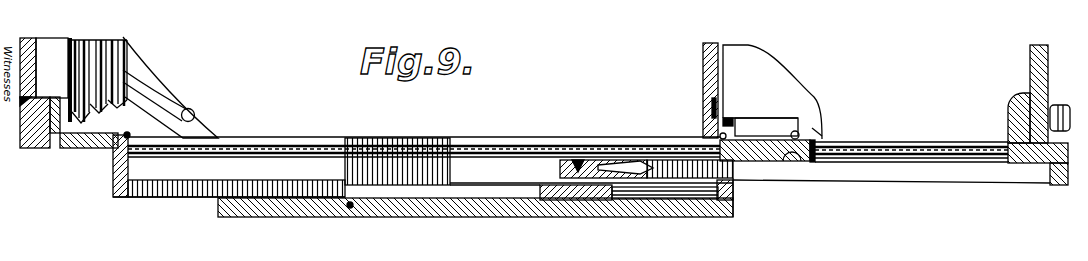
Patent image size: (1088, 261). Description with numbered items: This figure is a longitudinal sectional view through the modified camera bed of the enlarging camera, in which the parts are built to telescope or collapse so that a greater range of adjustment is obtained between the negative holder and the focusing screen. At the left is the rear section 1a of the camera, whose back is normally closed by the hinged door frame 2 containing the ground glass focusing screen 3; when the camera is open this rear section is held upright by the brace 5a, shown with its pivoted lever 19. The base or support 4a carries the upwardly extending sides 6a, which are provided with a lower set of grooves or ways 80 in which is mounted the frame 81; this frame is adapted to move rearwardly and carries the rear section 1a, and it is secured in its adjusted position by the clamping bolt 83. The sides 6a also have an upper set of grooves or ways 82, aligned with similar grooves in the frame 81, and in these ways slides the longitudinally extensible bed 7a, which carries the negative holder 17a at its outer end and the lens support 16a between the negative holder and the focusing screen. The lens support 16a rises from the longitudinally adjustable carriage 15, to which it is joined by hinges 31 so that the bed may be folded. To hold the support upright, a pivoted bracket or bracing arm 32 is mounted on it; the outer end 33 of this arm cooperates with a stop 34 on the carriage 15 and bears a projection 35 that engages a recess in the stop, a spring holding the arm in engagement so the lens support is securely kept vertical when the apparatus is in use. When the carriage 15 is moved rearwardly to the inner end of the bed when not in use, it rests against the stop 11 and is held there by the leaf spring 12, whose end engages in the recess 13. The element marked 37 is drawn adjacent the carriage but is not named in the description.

The hinged door frame 2 is at (30, 148).
The ground glass focusing screen 3 is at (73, 80).
The rear section 1a is at (64, 150).
The brace 5a is at (170, 93).
The lever 19 is at (153, 96).
The upper set of grooves or ways 82 is at (263, 153).
The frame 81 is at (295, 188).
The clamping bolt 83 is at (347, 208).
The upwardly extending sides 6a is at (397, 161).
The stop 11 is at (562, 153).
The leaf spring 12 is at (605, 157).
The base or support 4a is at (645, 205).
The lower set of grooves or ways 80 is at (712, 200).
The lens support 16a is at (703, 98).
The pivoted bracket or bracing arm 32 is at (758, 80).
The stop 34 is at (790, 133).
The projection 35 is at (805, 127).
The outer end of bracing arm 33 is at (812, 128).
The hinges 31 is at (725, 135).
The carriage 15 is at (770, 158).
The recess 13 is at (795, 163).
The stop 37 is at (822, 148).
The extensible bed 7a is at (978, 168).
The negative holder 17a is at (1040, 62).